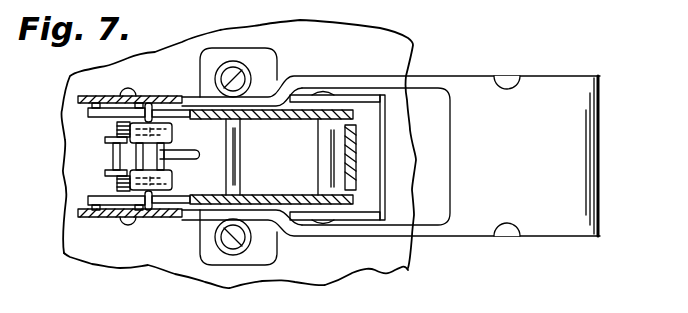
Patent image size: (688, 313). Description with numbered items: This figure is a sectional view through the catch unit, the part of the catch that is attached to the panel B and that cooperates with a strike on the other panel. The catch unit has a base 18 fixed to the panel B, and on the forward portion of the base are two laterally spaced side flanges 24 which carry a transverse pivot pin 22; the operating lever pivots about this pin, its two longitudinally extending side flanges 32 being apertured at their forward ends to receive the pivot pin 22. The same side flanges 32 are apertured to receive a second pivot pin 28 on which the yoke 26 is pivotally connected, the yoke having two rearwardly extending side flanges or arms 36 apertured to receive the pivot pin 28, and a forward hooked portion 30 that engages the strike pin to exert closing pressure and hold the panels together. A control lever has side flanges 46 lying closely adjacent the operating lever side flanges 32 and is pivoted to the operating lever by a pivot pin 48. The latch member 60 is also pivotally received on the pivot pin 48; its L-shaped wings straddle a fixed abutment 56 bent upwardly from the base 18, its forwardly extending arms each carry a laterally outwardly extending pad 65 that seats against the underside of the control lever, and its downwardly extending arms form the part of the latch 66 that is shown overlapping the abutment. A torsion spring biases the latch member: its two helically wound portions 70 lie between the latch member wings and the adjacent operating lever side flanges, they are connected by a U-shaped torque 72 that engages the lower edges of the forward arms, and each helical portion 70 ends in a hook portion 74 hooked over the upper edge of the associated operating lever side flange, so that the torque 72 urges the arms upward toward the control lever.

The base 18 is at (381, 168).
The pivot pin 22 is at (317, 152).
The side flanges 24 is at (383, 119).
The yoke 26 is at (533, 237).
The pivot pin 28 is at (235, 93).
The hooked portion 30 is at (600, 143).
The side flanges 32 is at (277, 119).
The side flanges or arms 36 is at (418, 80).
The side flanges 46 is at (150, 104).
The pivot pin 48 is at (133, 222).
The fixed abutment 56 is at (177, 156).
The latch member 60 is at (100, 139).
The pad 65 is at (172, 135).
The rod 66 is at (113, 157).
The helically wound portions 70 is at (117, 126).
The U-shaped torque 72 is at (200, 157).
The hook portion 74 is at (147, 100).
The panel B is at (406, 274).